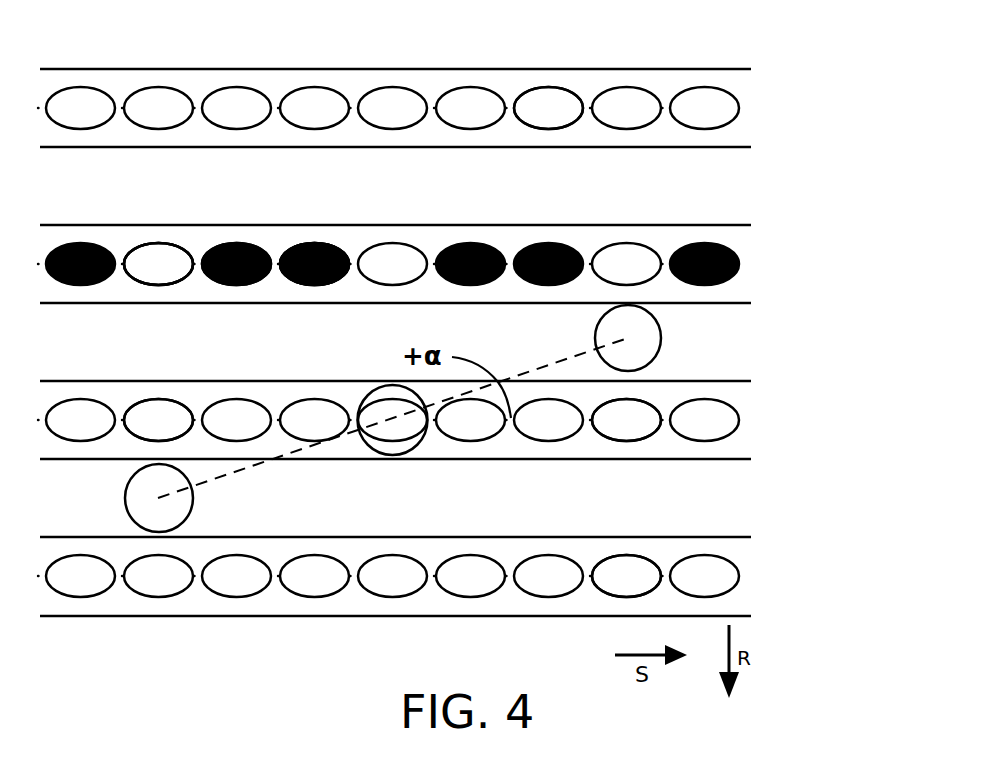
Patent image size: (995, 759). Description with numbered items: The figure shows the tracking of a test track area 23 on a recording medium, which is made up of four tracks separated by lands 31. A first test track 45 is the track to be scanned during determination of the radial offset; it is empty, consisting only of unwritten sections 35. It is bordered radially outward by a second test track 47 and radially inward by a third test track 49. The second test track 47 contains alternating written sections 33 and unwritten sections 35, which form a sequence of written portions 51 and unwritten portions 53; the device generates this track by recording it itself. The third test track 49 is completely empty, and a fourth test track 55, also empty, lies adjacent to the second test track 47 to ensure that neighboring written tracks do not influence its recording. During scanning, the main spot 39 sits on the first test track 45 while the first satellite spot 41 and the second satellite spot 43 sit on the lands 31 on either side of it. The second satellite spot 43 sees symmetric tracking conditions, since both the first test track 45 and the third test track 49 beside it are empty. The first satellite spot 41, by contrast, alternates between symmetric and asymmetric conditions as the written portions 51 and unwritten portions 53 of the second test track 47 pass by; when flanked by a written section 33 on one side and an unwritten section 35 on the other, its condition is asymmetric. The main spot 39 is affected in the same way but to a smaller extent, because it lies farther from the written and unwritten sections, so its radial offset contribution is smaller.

The test track area 23 is at (852, 63).
The lands 31 is at (750, 174).
The written sections 33 is at (333, 282).
The unwritten sections 35 is at (573, 123).
The main spot 39 is at (420, 440).
The first satellite spot 41 is at (661, 340).
The second satellite spot 43 is at (127, 480).
The first test track 45 is at (750, 403).
The second test track 47 is at (750, 241).
The third test track 49 is at (750, 554).
The written portions 51 is at (352, 218).
The unwritten portions 53 is at (196, 218).
The fourth test track 55 is at (750, 94).